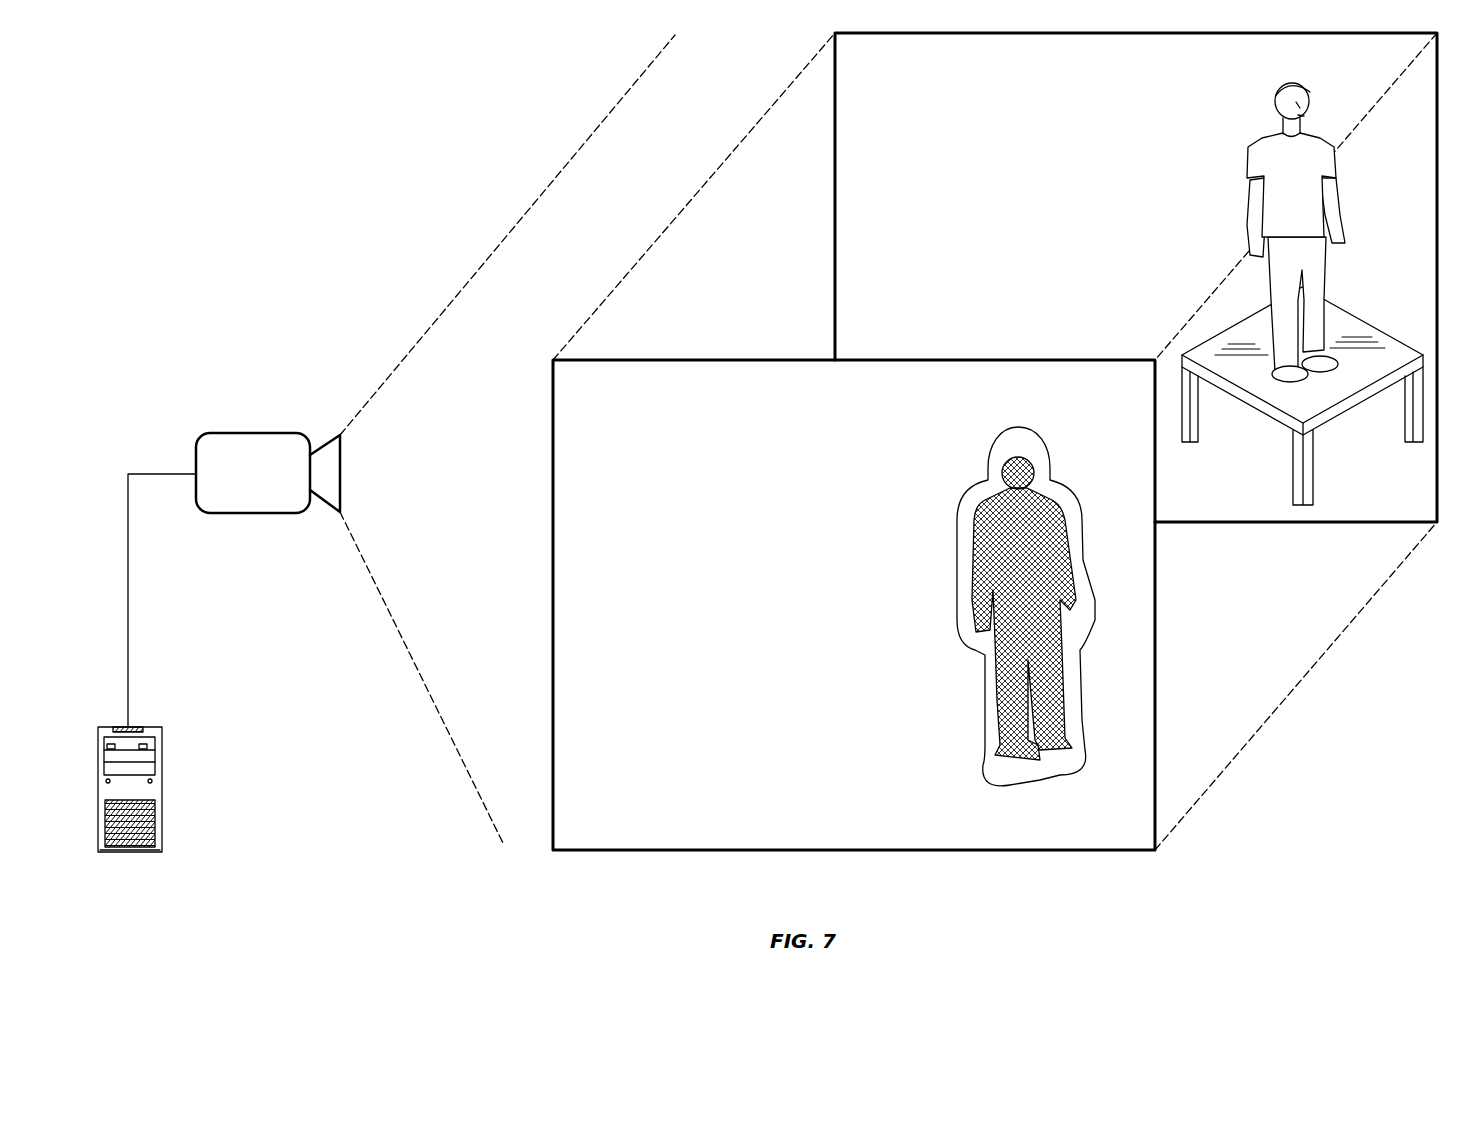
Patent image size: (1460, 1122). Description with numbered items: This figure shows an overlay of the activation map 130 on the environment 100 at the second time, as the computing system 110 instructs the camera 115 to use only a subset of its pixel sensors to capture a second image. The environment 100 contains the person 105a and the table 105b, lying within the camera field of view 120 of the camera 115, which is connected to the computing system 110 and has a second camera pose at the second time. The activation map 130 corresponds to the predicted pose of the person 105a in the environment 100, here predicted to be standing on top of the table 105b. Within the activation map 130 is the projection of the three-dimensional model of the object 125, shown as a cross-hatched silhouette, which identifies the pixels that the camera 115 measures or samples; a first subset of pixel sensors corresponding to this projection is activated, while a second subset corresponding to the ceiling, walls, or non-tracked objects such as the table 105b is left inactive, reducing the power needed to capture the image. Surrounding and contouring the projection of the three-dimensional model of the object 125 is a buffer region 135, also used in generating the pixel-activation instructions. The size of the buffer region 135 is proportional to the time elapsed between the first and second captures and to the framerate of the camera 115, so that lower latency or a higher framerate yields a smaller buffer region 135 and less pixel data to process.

The environment 100 is at (857, 217).
The person 105a is at (1256, 138).
The table 105b is at (1364, 319).
The computing system 110 is at (162, 790).
The camera 115 is at (257, 433).
The camera field of view 120 is at (830, 255).
The projection of the 3D model of the object 125 is at (975, 565).
The activation map 130 is at (552, 455).
The buffer region 135 is at (995, 437).